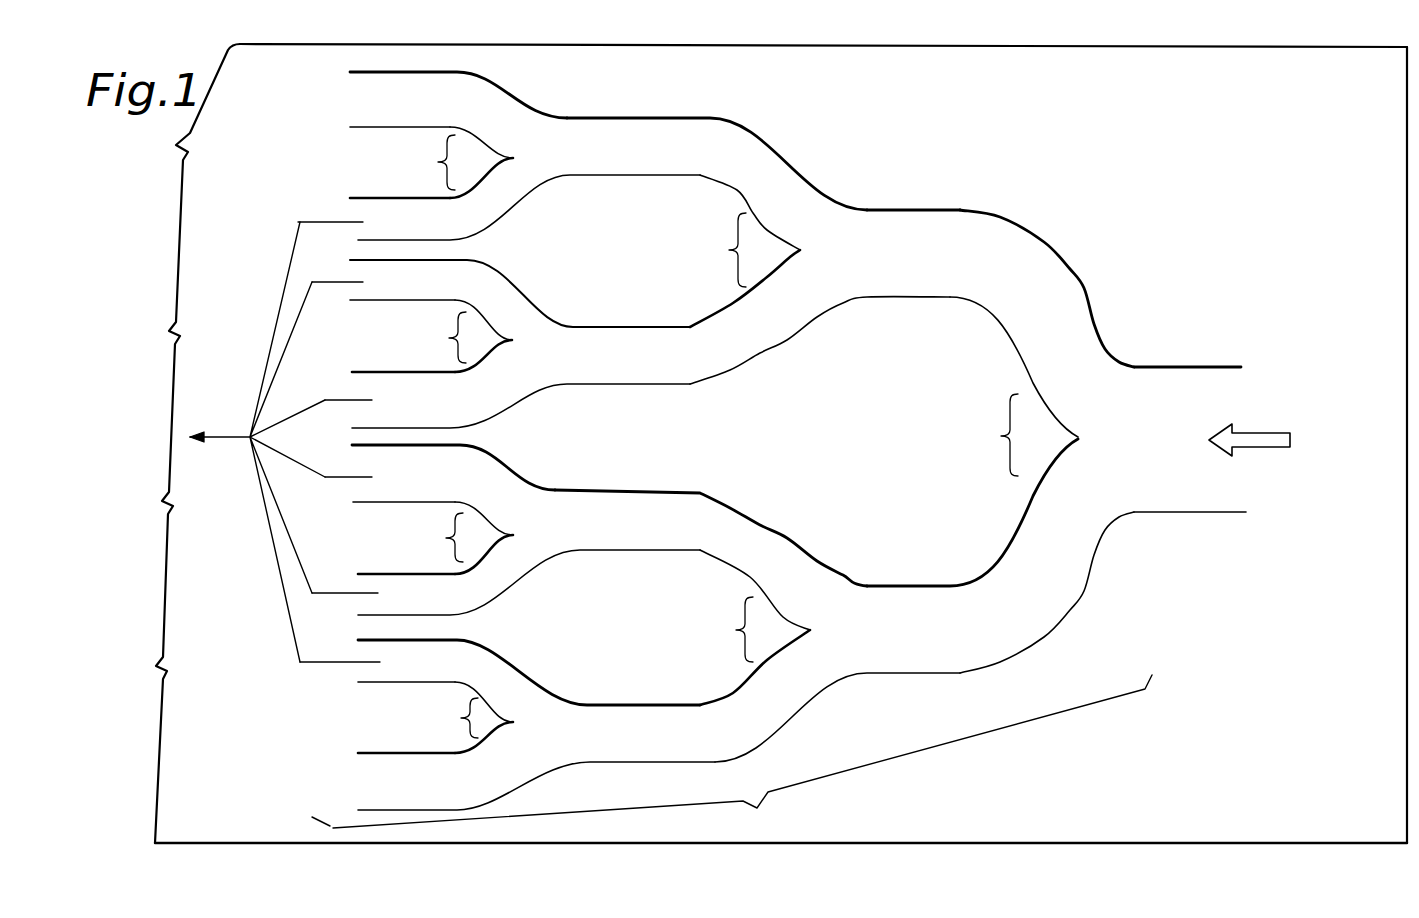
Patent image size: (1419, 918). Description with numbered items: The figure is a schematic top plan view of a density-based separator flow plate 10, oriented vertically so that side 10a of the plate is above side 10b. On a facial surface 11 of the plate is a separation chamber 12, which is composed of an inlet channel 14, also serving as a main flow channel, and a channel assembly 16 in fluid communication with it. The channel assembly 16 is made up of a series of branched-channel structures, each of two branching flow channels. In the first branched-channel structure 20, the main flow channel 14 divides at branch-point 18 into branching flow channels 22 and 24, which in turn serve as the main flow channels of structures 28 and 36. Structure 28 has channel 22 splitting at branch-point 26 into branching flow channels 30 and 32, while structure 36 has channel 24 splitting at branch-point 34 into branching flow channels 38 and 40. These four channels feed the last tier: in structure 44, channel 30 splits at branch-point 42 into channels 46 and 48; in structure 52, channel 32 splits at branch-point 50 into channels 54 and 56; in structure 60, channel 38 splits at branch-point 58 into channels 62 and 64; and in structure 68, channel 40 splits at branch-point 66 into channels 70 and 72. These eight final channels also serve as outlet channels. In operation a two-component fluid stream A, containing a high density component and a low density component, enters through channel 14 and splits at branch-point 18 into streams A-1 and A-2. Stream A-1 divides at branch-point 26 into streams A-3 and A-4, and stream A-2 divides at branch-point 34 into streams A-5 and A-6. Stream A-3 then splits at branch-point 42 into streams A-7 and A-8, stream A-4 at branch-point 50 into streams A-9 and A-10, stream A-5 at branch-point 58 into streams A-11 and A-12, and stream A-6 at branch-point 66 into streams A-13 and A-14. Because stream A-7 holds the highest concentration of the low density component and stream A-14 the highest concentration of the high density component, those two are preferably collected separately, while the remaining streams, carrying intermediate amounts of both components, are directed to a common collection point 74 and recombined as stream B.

The flow plate 10 is at (1303, 47).
The side of the plate 10a is at (798, 46).
The side of the plate 10b is at (870, 845).
The facial surface 11 is at (1255, 139).
The separation chamber 12 is at (732, 757).
The inlet channel 14 is at (1219, 382).
The channel assembly 16 is at (970, 202).
The branch-point 18 is at (1080, 438).
The first branched-channel structure 20 is at (1001, 436).
The branching flow channel 22 is at (1018, 239).
The branching flow channel 24 is at (1070, 592).
The branch-point 26 is at (803, 250).
The branched-channel structure 28 is at (729, 250).
The branching flow channel 30 is at (687, 120).
The branching flow channel 32 is at (657, 372).
The branch-point 34 is at (812, 631).
The branched-channel structure 36 is at (736, 630).
The branching flow channel 38 is at (669, 490).
The branching flow channel 40 is at (727, 753).
The branch-point 42 is at (516, 158).
The branched-channel structure 44 is at (438, 162).
The branching flow channel 46 is at (485, 84).
The branching flow channel 48 is at (507, 210).
The branch-point 50 is at (514, 341).
The branched-channel structure 52 is at (449, 338).
The branching flow channel 54 is at (493, 275).
The branching flow channel 56 is at (493, 408).
The branch-point 58 is at (515, 533).
The branched-channel structure 60 is at (446, 538).
The branching flow channel 62 is at (487, 455).
The branching flow channel 64 is at (502, 593).
The branch-point 66 is at (516, 723).
The branched-channel structure 68 is at (461, 718).
The branching flow channel 70 is at (488, 655).
The branching flow channel 72 is at (485, 802).
The common collection point 74 is at (243, 448).
The two-component fluid stream A is at (1264, 438).
The recombined stream B is at (242, 432).
The stream A-1 is at (1051, 334).
The stream A-2 is at (1057, 526).
The stream A-3 is at (740, 157).
The stream A-4 is at (778, 303).
The stream A-5 is at (772, 565).
The stream A-6 is at (753, 713).
The stream A-7 is at (367, 98).
The stream A-8 is at (328, 220).
The stream A-9 is at (338, 285).
The stream A-10 is at (347, 398).
The stream A-11 is at (348, 481).
The stream A-12 is at (350, 592).
The stream A-13 is at (352, 660).
The stream A-14 is at (383, 782).